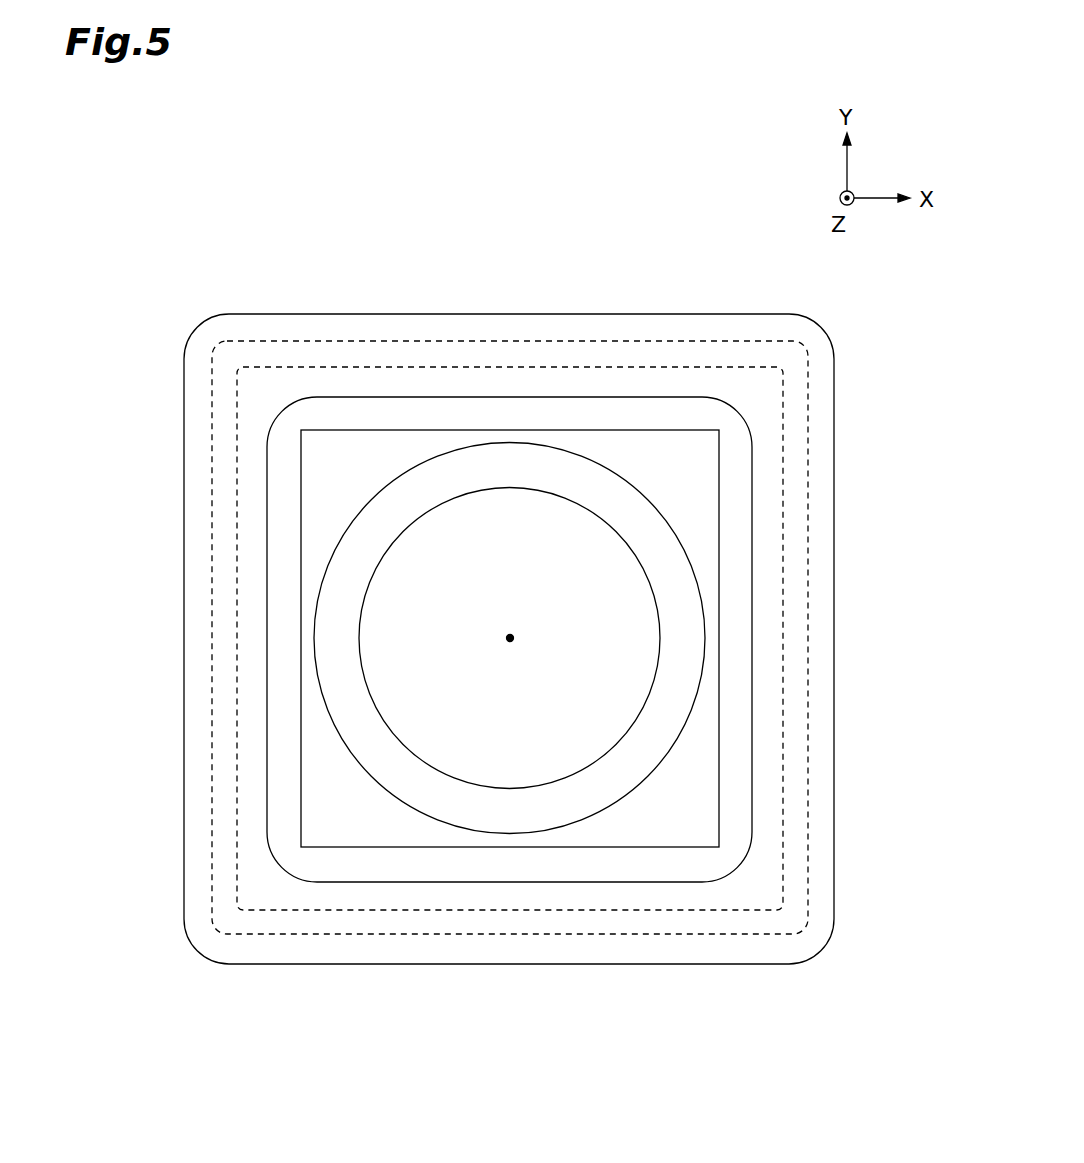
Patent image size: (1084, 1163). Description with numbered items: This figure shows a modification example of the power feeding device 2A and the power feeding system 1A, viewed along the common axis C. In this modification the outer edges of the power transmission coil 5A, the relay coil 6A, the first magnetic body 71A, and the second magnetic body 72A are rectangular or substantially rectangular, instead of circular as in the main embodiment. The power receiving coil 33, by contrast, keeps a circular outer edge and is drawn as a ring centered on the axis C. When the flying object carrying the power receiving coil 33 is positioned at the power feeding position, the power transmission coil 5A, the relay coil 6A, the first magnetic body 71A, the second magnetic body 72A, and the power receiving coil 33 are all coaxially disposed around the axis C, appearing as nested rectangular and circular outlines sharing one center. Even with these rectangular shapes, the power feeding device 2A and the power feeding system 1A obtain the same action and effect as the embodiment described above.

The power feeding device 2A is at (552, 554).
The power feeding system 1A is at (552, 554).
The second magnetic body 72A is at (642, 445).
The power receiving coil 33 is at (666, 538).
The relay coil 6A is at (836, 572).
The first magnetic body 71A is at (808, 634).
The power transmission coil 5A is at (783, 710).
The axis C is at (510, 631).